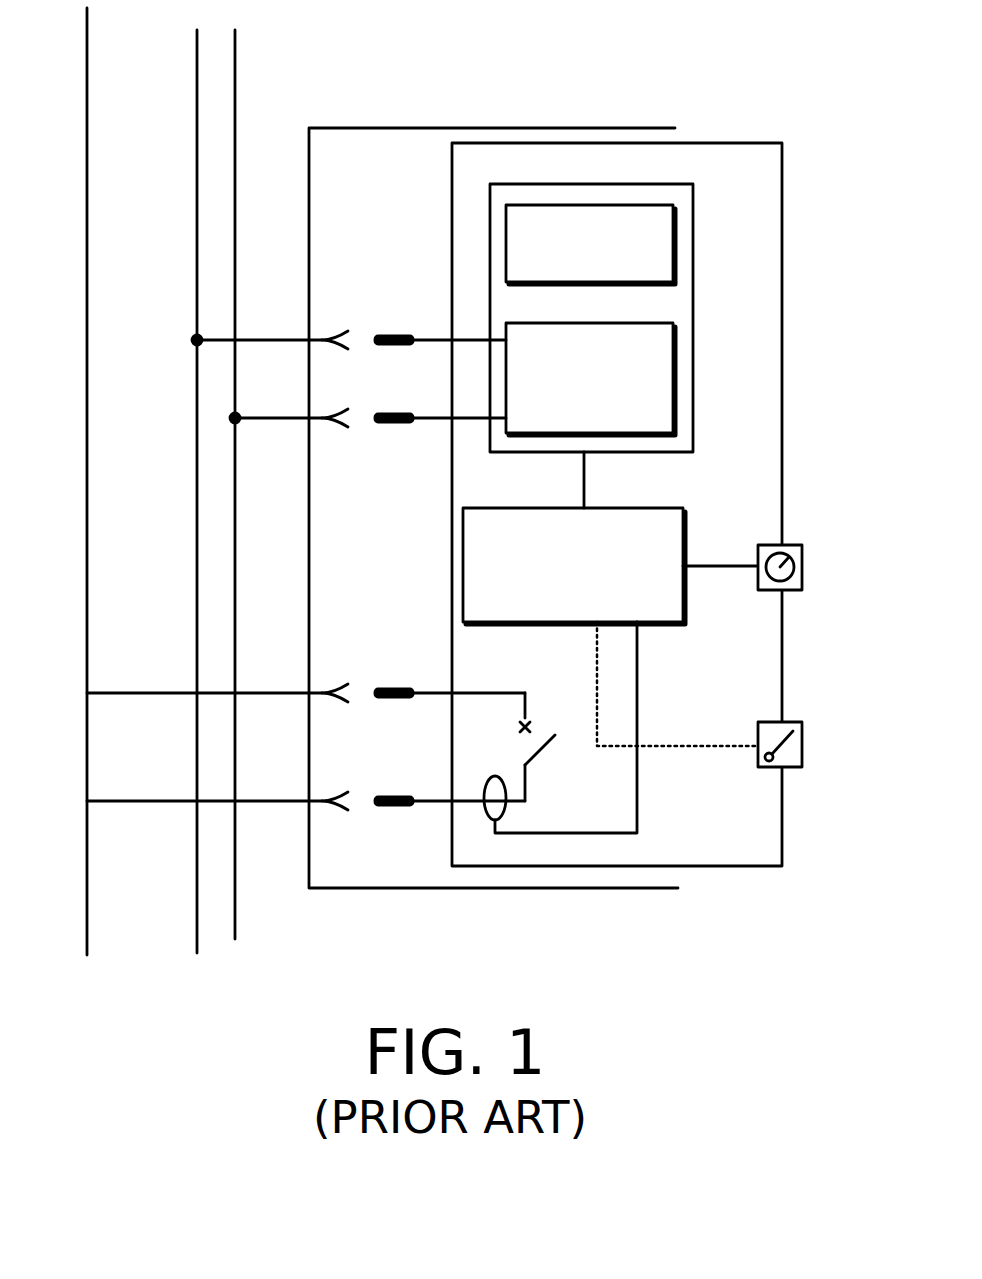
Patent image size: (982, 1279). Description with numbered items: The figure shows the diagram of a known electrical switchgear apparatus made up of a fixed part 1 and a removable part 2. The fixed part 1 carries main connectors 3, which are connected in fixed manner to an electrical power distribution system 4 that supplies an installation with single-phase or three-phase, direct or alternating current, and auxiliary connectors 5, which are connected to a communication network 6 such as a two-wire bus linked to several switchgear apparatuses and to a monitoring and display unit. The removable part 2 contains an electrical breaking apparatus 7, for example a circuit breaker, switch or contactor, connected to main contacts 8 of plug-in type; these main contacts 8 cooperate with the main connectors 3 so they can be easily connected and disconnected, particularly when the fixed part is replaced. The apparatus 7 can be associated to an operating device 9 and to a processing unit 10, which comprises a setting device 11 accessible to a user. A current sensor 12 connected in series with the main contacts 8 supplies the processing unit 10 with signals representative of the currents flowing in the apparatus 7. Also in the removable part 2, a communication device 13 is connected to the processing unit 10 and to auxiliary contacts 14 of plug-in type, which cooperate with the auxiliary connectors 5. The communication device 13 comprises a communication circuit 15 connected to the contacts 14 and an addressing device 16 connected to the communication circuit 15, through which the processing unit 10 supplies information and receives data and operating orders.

The fixed part 1 is at (495, 127).
The removable part 2 is at (782, 350).
The main connectors 3 is at (345, 705).
The electrical power distribution system 4 is at (90, 697).
The auxiliary connectors 5 is at (345, 352).
The communication network 6 is at (236, 81).
The electrical breaking apparatus 7 is at (534, 692).
The main contacts 8 is at (383, 700).
The operating device 9 is at (785, 722).
The processing unit 10 is at (680, 505).
The setting device 11 is at (787, 545).
The current sensor 12 is at (506, 805).
The communication device 13 is at (693, 292).
The auxiliary contacts 14 is at (383, 347).
The communication circuit 15 is at (675, 365).
The addressing device 16 is at (675, 218).